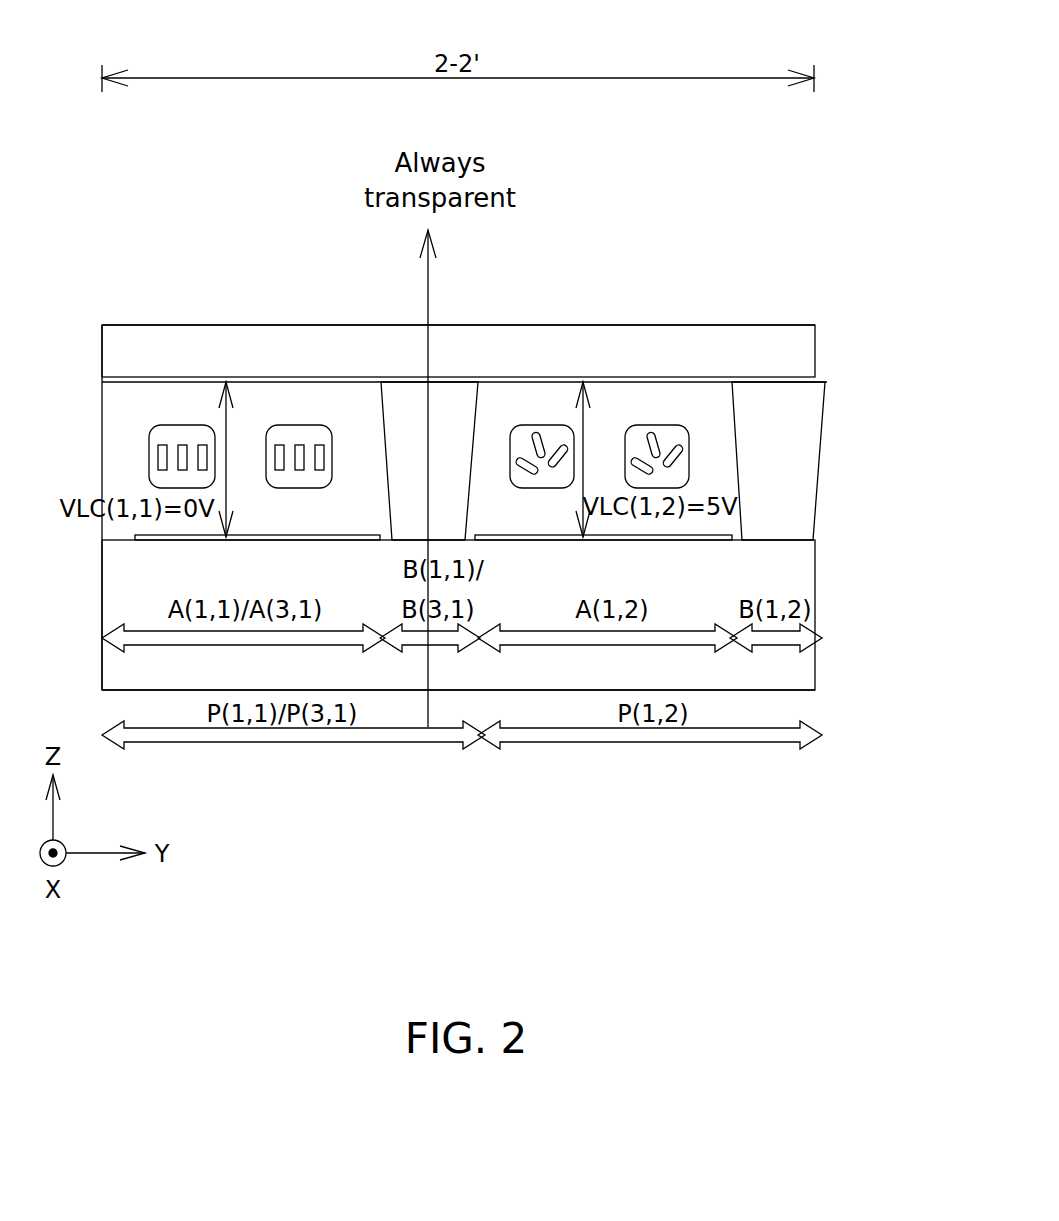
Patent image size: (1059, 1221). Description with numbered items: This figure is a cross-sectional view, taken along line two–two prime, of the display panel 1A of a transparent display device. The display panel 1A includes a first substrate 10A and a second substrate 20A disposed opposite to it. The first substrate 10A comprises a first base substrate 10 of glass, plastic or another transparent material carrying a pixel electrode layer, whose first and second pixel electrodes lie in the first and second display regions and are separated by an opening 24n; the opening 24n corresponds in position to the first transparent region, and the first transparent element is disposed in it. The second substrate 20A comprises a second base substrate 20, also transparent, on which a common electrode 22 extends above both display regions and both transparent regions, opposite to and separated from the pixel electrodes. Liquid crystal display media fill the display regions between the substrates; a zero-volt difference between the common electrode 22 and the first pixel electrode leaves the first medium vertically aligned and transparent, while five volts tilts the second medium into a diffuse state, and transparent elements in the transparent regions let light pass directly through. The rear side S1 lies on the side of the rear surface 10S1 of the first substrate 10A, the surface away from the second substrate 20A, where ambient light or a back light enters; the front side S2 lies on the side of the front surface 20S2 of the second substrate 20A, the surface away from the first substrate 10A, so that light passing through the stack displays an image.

The display panel 1A is at (742, 198).
The front side S2 is at (752, 248).
The front surface 20S2 is at (753, 325).
The common electrode 22 is at (827, 382).
The second substrate 20A is at (850, 325).
The second base substrate 20 is at (406, 361).
The opening 24n is at (425, 538).
The first substrate 10A is at (850, 537).
The first base substrate 10 is at (627, 682).
The rear surface 10S1 is at (752, 692).
The rear side S1 is at (752, 768).